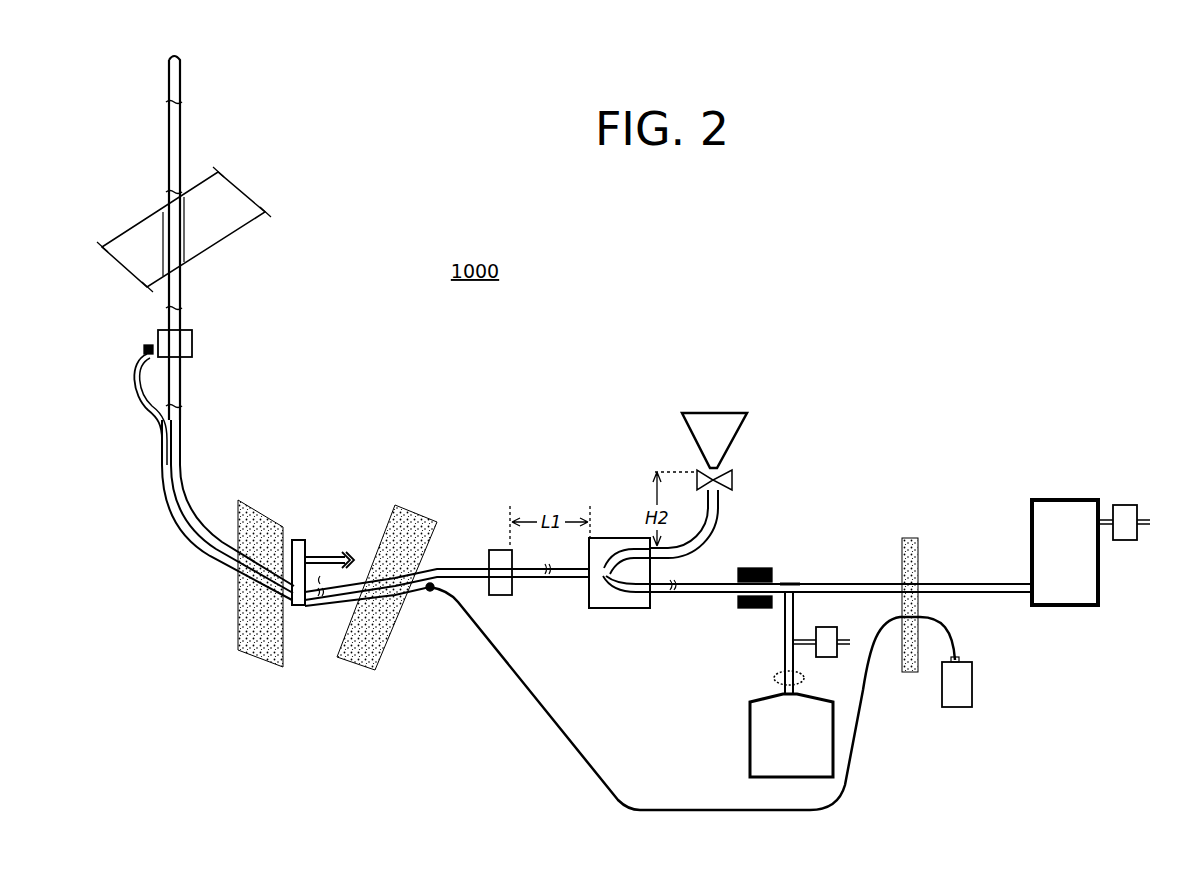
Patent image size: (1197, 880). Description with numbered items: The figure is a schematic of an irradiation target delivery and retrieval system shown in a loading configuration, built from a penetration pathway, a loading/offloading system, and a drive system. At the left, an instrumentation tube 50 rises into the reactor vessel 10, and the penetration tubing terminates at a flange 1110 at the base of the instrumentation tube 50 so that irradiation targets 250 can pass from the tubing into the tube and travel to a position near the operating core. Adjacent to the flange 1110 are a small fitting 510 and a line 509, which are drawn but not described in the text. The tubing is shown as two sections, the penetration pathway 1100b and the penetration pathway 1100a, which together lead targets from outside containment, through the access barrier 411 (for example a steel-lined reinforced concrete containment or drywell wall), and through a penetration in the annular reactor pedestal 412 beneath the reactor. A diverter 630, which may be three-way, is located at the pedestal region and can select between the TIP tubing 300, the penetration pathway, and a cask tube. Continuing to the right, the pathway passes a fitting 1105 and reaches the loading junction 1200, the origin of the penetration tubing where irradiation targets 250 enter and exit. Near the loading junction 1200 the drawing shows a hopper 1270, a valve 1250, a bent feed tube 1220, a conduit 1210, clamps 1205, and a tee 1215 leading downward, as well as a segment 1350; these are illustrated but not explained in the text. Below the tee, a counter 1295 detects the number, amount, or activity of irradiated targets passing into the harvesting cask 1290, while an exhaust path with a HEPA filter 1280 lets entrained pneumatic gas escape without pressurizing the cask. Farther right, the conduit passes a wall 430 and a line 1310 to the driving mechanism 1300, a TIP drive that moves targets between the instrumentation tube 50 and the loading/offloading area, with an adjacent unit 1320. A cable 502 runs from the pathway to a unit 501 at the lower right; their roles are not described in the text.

The instrumentation tube 50 is at (167, 167).
The reactor vessel 10 is at (243, 227).
The flange 1110 is at (195, 345).
The connector 510 is at (145, 347).
The cable 509 is at (161, 478).
The penetration pathway 1100b is at (183, 452).
The reactor pedestal 412 is at (237, 633).
The diverter 630 is at (298, 537).
The TIP tubing 300 is at (338, 552).
The penetration pathway 1100a is at (472, 567).
The access barrier 411 is at (357, 660).
The coupling 1105 is at (504, 597).
The loading junction 1200 is at (637, 612).
The irradiation targets 250 is at (702, 545).
The conduit 1210 is at (702, 598).
The feed tube 1220 is at (720, 503).
The hopper 1270 is at (690, 432).
The valve 1250 is at (735, 472).
The clamp 1205 is at (754, 610).
The tee fitting 1215 is at (788, 582).
The conduit segment 1350 is at (815, 583).
The filter 1280 is at (825, 627).
The counter 1295 is at (770, 681).
The harvesting cask 1290 is at (745, 747).
The wall 430 is at (908, 537).
The conduit 1310 is at (967, 583).
The driving mechanism 1300 is at (1062, 496).
The controller 1320 is at (1128, 503).
The power cable 502 is at (855, 760).
The power supply 501 is at (975, 685).